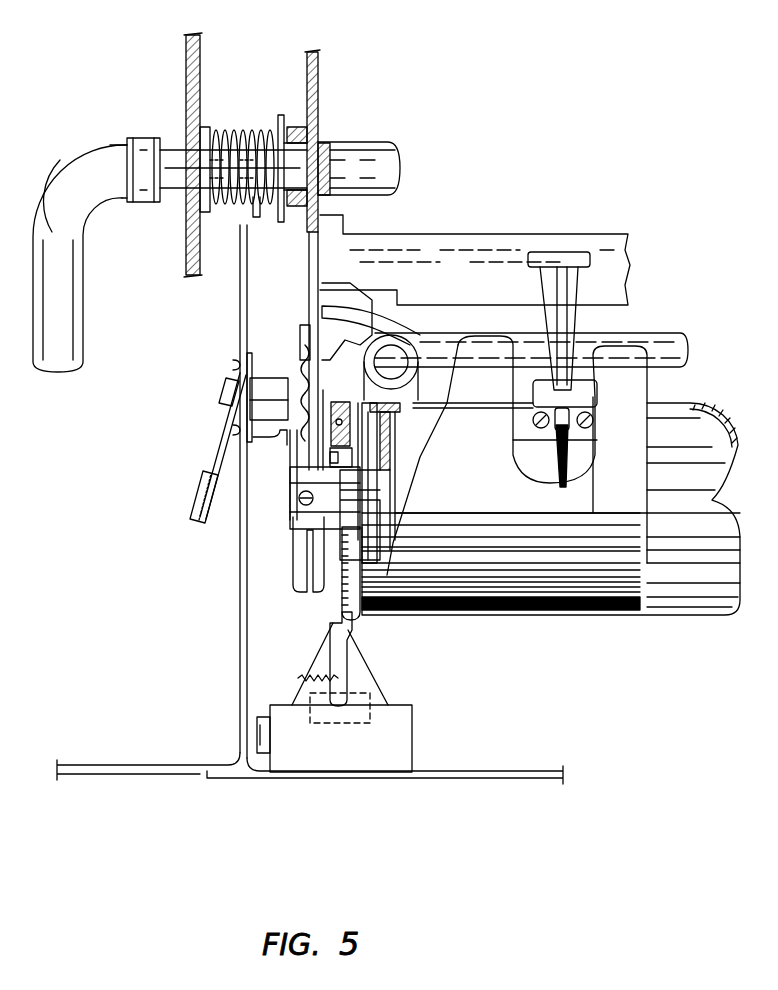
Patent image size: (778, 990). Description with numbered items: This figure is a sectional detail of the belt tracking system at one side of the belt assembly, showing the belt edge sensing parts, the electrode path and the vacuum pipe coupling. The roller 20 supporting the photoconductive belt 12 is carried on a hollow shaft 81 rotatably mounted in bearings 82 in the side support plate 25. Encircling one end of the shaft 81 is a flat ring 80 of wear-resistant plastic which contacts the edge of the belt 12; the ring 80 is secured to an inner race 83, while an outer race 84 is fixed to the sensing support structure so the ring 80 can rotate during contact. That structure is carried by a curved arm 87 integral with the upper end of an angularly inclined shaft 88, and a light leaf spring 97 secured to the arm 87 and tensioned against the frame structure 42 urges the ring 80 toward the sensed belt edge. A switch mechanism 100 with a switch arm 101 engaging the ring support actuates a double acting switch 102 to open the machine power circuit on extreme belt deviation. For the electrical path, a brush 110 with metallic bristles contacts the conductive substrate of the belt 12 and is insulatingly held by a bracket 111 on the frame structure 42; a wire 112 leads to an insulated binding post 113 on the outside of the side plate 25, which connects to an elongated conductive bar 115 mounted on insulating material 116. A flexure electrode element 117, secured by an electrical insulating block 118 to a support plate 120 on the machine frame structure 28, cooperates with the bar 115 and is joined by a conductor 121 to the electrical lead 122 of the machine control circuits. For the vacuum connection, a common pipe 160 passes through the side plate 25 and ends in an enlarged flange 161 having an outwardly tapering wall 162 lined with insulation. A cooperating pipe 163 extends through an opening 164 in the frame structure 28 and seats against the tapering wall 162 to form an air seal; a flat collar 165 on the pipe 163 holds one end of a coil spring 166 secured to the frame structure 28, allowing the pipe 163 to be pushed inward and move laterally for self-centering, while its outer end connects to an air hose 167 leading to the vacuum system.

The frame structure 28 is at (200, 48).
The side support plate 25 is at (318, 57).
The enlarged flange 161 is at (300, 128).
The flat collar 165 is at (268, 128).
The opening 164 is at (186, 148).
The common pipe 160 is at (365, 150).
The cooperating pipe 163 is at (178, 190).
The outwardly tapering wall 162 is at (296, 215).
The coil spring 166 is at (255, 220).
The frame structure 42 is at (458, 240).
The air hose 167 is at (85, 297).
The support plate 120 is at (238, 296).
The light leaf spring 97 is at (340, 318).
The insulated binding post 113 is at (305, 333).
The insulating material 116 is at (300, 355).
The flexure electrode element 117 is at (300, 380).
The wire 112 is at (477, 326).
The bracket 111 is at (578, 320).
The angularly inclined shaft 88 is at (400, 362).
The outer race 84 is at (342, 398).
The photoconductive belt 12 is at (645, 383).
The electrical insulating block 118 is at (260, 388).
The curved arm 87 is at (393, 417).
The inner race 83 is at (390, 440).
The elongated conductive bar 115 is at (290, 440).
The brush 110 is at (575, 465).
The electrical lead 122 is at (193, 494).
The shaft 81 is at (300, 503).
The conductor 121 is at (222, 520).
The bearings 82 is at (293, 565).
The flat ring 80 is at (342, 585).
The roller 20 is at (705, 595).
The switch arm 101 is at (347, 650).
The switch mechanism 100 is at (388, 690).
The double acting switch 102 is at (352, 718).